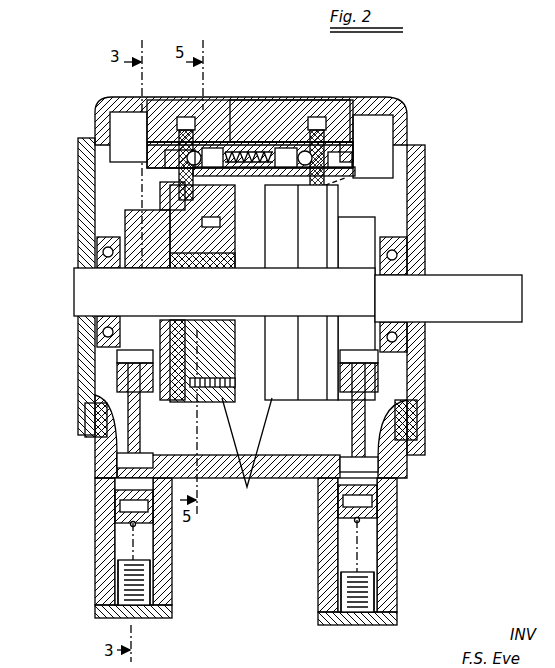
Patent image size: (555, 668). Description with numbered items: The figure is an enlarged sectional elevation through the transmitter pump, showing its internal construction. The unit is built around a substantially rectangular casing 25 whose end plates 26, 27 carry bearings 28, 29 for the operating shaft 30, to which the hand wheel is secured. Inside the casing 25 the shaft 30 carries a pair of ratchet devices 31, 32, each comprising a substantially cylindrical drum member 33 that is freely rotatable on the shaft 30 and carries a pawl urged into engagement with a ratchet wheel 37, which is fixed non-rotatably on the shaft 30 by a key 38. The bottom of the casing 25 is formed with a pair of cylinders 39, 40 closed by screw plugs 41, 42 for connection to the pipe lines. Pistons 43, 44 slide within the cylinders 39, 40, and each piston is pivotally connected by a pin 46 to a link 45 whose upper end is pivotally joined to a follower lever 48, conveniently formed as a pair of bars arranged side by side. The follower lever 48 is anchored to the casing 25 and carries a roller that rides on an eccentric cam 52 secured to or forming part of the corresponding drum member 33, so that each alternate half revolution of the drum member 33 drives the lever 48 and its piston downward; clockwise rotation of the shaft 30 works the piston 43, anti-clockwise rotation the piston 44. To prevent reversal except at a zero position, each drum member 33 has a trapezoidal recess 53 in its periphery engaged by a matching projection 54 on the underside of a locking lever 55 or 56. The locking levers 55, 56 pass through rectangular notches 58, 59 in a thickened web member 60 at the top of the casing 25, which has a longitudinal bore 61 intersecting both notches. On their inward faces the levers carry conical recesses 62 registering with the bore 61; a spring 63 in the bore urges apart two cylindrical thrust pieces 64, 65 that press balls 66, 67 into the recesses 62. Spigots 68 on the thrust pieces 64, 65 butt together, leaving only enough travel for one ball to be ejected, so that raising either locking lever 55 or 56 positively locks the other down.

The casing 25 is at (282, 120).
The end plate 26 is at (78, 183).
The end plate 27 is at (425, 218).
The bearing 28 is at (100, 248).
The bearing 29 is at (400, 258).
The operating shaft 30 is at (465, 285).
The ratchet device 31 is at (200, 402).
The ratchet device 32 is at (290, 400).
The drum member 33 is at (247, 452).
The ratchet wheel 37 is at (225, 232).
The key 38 is at (235, 330).
The cylinder 39 is at (100, 555).
The cylinder 40 is at (385, 560).
The screw plug 41 is at (95, 610).
The screw plug 42 is at (397, 615).
The piston 43 is at (118, 492).
The piston 44 is at (378, 488).
The link 45 is at (128, 420).
The pin 46 is at (117, 460).
The follower lever 48 is at (117, 376).
The eccentric cam 52 is at (140, 213).
The trapezoidal recess 53 is at (160, 192).
The projection 54 is at (236, 210).
The locking lever 55 is at (188, 150).
The locking lever 56 is at (352, 105).
The notch 58 is at (187, 117).
The notch 59 is at (312, 148).
The web member 60 is at (245, 140).
The longitudinal bore 61 is at (353, 150).
The conical recess 62 is at (212, 148).
The spring 63 is at (262, 150).
The thrust piece 64 is at (228, 135).
The thrust piece 65 is at (290, 150).
The ball 66 is at (176, 158).
The ball 67 is at (340, 160).
The spigot 68 is at (245, 176).